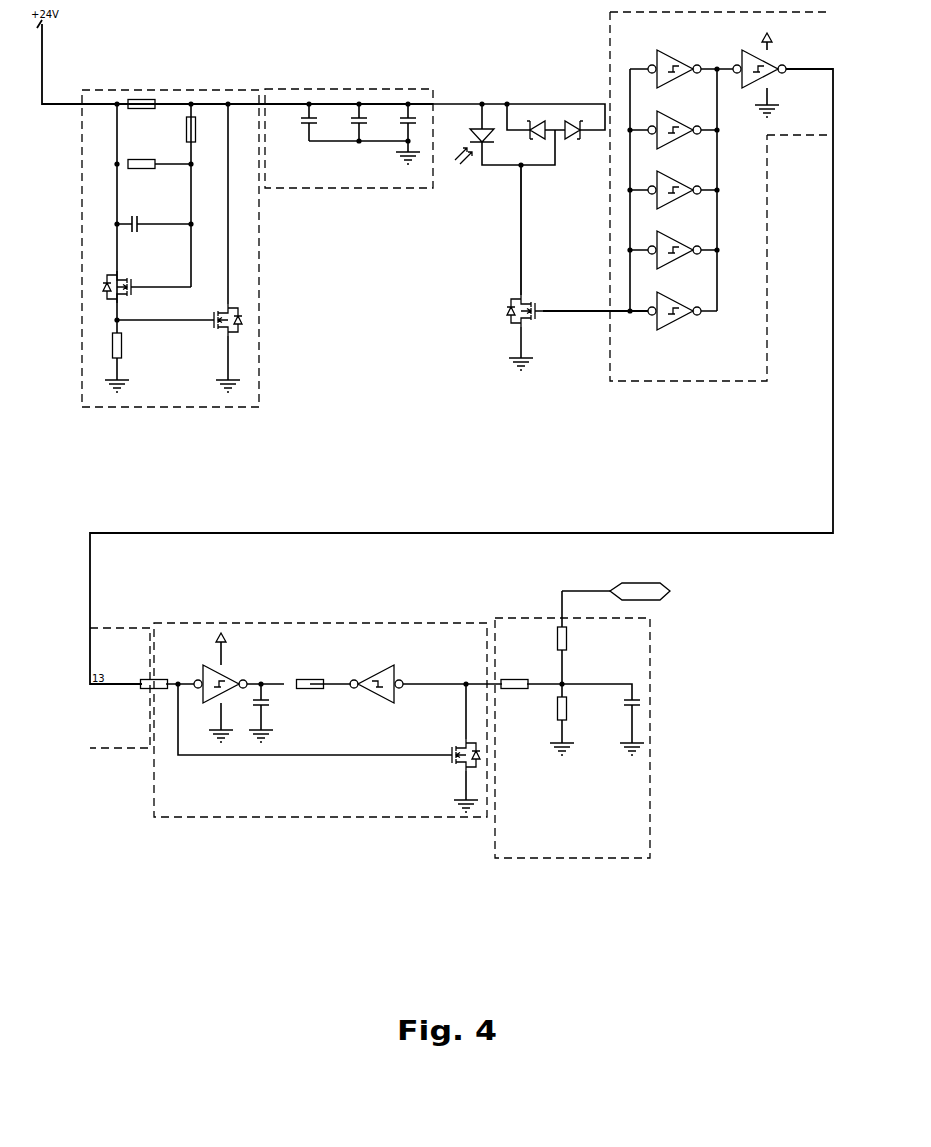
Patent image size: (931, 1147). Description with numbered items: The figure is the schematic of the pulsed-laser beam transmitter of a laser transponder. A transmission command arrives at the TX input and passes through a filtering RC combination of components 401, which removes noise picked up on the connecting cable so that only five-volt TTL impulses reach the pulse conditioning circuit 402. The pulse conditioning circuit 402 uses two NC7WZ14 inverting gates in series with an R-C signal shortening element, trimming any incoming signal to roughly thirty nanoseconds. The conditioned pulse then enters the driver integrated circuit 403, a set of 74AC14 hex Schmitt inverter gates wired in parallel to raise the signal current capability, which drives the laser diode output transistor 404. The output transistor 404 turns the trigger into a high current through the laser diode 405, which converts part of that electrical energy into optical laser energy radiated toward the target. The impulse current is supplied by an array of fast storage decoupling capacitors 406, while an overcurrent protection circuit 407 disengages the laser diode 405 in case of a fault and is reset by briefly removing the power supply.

The filtering RC combination of components 401 is at (567, 848).
The pulse conditioning circuit 402 is at (322, 806).
The driver integrated circuit 403 is at (755, 343).
The laser diode output transistor 404 is at (492, 312).
The laser diode 405 is at (476, 175).
The array of fast storage decoupling capacitors 406 is at (340, 183).
The overcurrent protection circuit 407 is at (243, 345).